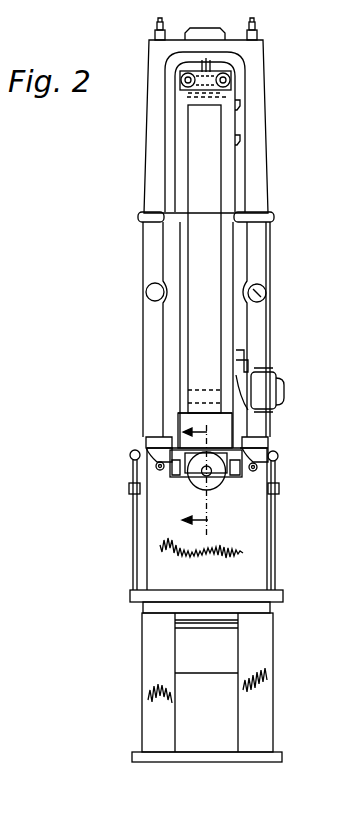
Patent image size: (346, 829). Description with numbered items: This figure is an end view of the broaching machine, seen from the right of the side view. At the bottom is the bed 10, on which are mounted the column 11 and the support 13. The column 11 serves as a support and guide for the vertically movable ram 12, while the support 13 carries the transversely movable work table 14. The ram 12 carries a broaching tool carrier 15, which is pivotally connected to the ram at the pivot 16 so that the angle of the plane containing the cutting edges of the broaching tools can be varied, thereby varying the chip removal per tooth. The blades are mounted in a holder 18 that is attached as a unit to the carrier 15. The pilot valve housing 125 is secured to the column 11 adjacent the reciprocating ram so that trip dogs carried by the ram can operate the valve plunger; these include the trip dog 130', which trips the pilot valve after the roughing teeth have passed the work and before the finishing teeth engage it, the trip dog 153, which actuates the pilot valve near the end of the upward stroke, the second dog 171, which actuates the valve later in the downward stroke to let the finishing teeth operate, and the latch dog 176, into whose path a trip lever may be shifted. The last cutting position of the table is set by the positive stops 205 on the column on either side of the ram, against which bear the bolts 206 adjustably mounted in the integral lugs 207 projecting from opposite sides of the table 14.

The bed 10 is at (142, 650).
The column 11 is at (268, 252).
The ram 12 is at (225, 185).
The support 13 is at (270, 556).
The work table 14 is at (170, 443).
The broaching tool carrier 15 is at (182, 122).
The pivotal connection 16 is at (198, 388).
The holder 18 is at (190, 262).
The housing 125 is at (268, 388).
The trip dog 130' is at (276, 137).
The trip dog 153 is at (265, 425).
The second dog 171 is at (240, 104).
The latch dog 176 is at (242, 363).
The positive stops 205 is at (150, 448).
The bolts 206 is at (145, 472).
The integral lugs 207 is at (156, 467).